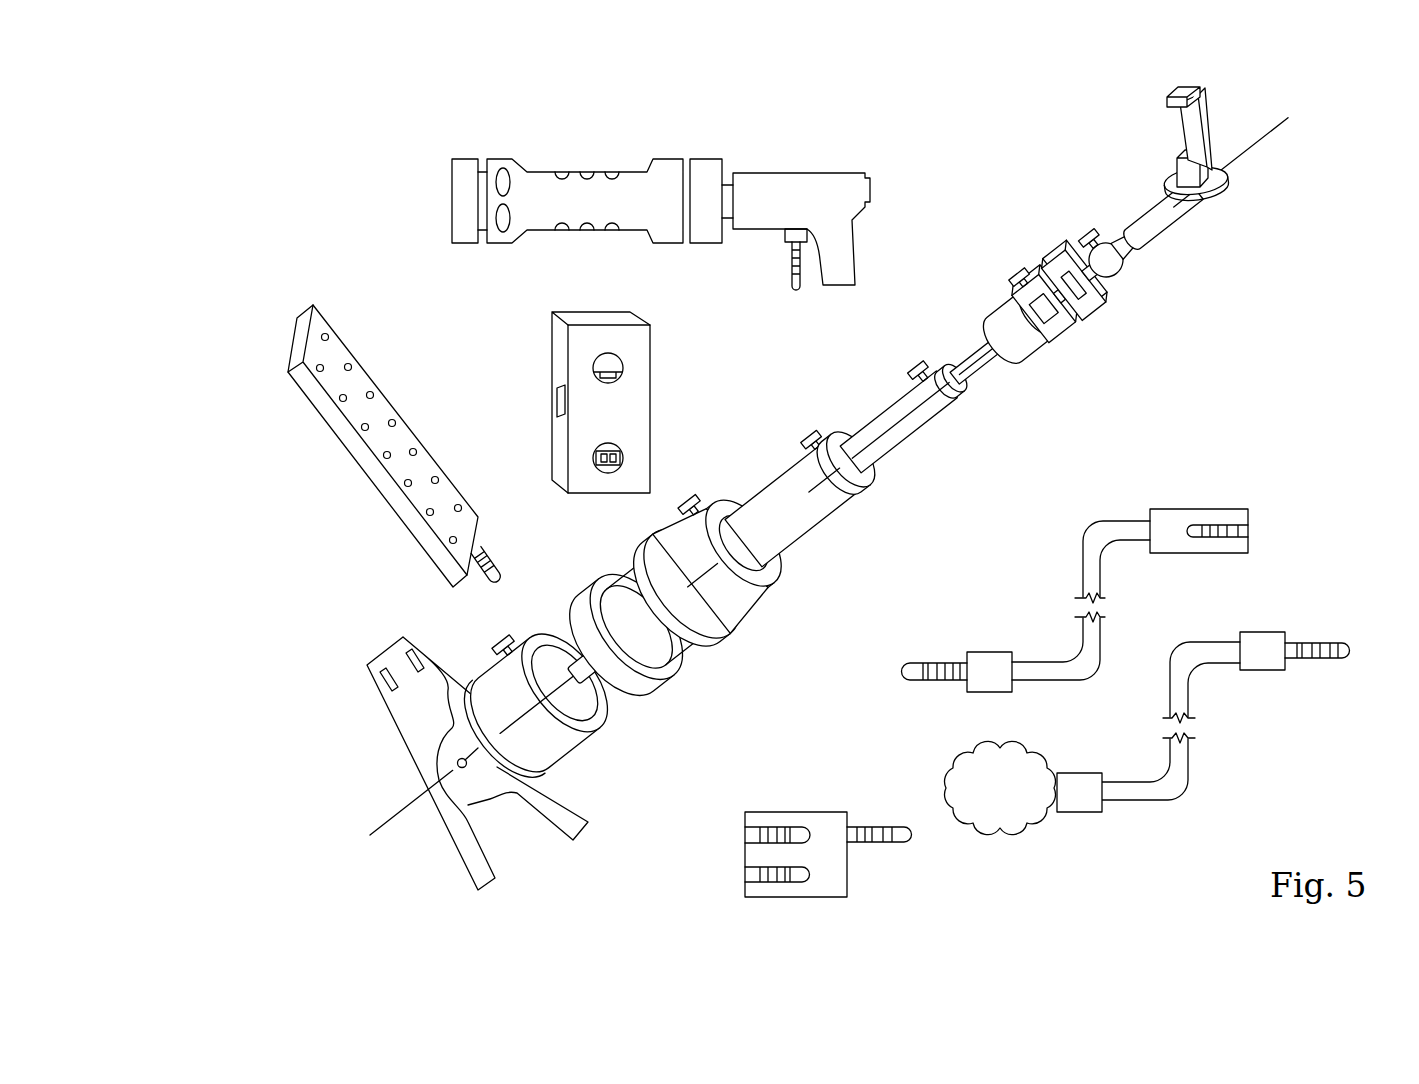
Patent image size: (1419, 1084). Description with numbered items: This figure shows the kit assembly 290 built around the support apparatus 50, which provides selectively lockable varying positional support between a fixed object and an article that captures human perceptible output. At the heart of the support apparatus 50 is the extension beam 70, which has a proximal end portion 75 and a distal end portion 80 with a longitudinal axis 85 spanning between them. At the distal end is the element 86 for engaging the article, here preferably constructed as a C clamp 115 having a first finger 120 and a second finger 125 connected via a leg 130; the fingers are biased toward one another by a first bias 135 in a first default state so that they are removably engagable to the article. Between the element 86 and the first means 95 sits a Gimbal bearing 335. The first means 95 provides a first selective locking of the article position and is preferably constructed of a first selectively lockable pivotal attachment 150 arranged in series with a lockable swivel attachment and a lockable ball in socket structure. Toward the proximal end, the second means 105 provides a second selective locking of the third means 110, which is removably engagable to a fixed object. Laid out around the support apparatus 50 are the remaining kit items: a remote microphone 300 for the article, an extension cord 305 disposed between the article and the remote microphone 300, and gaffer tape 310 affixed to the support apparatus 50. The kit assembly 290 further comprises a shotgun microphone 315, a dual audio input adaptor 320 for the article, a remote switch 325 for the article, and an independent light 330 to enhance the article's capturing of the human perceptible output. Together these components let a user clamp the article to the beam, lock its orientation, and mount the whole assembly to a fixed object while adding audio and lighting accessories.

The support apparatus 50 is at (985, 147).
The extension beam 70 is at (848, 453).
The proximal end portion 75 is at (737, 537).
The distal end portion 80 is at (979, 358).
The longitudinal axis 85 is at (1250, 150).
The element for engaging the article 86 is at (1201, 87).
The first means 95 is at (1139, 224).
The second means 105 is at (537, 696).
The third means 110 is at (507, 790).
The C clamp 115 is at (1212, 168).
The first finger 120 is at (1177, 176).
The second finger 125 is at (1165, 100).
The leg 130 is at (1192, 132).
The first bias 135 is at (1173, 124).
The first selectively lockable pivotal attachment 150 is at (1023, 315).
The kit assembly 290 is at (282, 148).
The remote microphone 300 is at (958, 757).
The extension cord 305 is at (1082, 570).
The gaffer tape 310 is at (663, 605).
The shotgun microphone 315 is at (464, 158).
The dual audio input adaptor 320 is at (847, 872).
The remote switch 325 is at (552, 350).
The independent light 330 is at (337, 443).
The Gimbal bearing 335 is at (1076, 278).